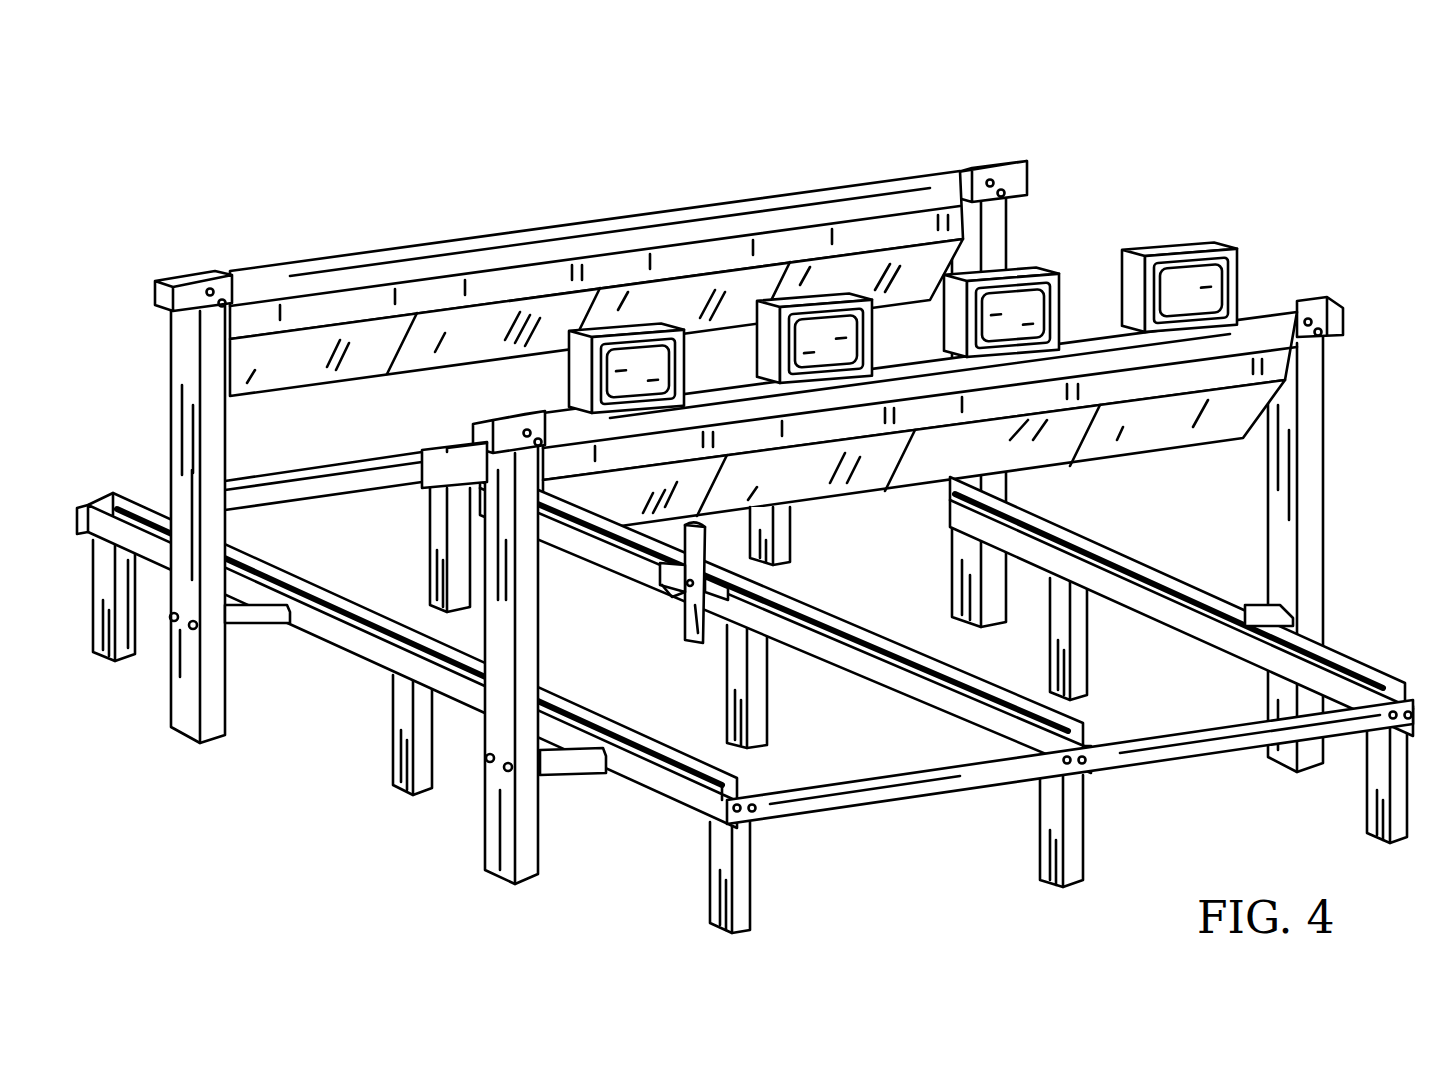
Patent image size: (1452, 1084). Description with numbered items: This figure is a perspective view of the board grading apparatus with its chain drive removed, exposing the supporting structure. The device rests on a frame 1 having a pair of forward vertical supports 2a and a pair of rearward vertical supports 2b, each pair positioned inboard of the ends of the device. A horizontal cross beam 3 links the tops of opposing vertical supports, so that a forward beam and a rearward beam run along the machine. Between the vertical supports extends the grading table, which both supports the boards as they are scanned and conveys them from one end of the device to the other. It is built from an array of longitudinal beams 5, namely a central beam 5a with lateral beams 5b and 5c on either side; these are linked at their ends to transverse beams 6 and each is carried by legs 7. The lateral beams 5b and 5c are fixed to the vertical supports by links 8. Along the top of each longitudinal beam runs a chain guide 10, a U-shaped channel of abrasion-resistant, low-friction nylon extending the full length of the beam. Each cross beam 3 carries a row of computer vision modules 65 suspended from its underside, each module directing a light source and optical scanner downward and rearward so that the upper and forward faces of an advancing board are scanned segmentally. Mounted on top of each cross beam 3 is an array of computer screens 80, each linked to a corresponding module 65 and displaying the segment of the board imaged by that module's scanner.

The frame 1 is at (745, 508).
The forward vertical supports 2a is at (490, 842).
The rearward vertical supports 2b is at (213, 722).
The horizontal cross beam 3 is at (440, 268).
The longitudinal beams 5 is at (745, 692).
The central beam 5a is at (925, 698).
The lateral beam 5b is at (687, 795).
The lateral beam 5c is at (1240, 650).
The transverse beams 6 is at (887, 840).
The legs 7 is at (740, 913).
The links 8 is at (265, 620).
The chain guide 10 is at (648, 723).
The computer vision modules 65 is at (322, 320).
The computer screens 80 is at (628, 328).